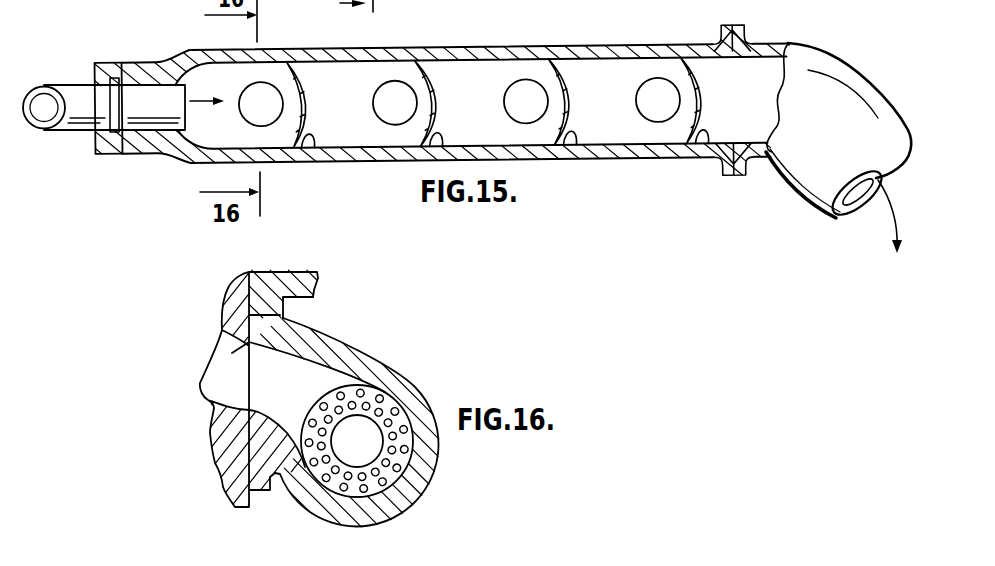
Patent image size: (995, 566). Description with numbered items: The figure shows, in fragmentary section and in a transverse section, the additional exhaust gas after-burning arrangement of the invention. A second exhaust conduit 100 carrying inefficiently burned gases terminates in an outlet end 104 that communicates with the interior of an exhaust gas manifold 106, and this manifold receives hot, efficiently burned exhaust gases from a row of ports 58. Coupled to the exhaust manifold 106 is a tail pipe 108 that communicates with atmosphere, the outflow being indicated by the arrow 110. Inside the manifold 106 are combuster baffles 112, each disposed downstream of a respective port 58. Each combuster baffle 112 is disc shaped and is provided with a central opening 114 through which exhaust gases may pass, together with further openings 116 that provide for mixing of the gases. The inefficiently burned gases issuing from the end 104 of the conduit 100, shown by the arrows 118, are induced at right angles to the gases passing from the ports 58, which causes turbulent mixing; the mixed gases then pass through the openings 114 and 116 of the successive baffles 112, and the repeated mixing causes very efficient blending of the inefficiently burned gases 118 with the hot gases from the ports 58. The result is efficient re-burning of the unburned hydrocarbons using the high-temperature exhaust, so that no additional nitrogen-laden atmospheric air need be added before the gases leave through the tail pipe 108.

In FIG. 15, the ports 58 is at (500, 98).
In FIG. 16, the ports 58 is at (284, 319).
In FIG. 15, the second exhaust conduit 100 is at (73, 86).
In FIG. 15, the outlet end 104 is at (183, 106).
In FIG. 15, the exhaust gas manifold 106 is at (360, 153).
In FIG. 15, the tail pipe 108 is at (817, 160).
In FIG. 15, the arrow 110 is at (888, 212).
In FIG. 15, the combuster baffles 112 is at (301, 149).
In FIG. 16, the combuster baffles 112 is at (350, 386).
In FIG. 16, the central opening 114 is at (397, 427).
In FIG. 16, the openings 116 is at (391, 420).
In FIG. 15, the arrows 118 is at (199, 100).